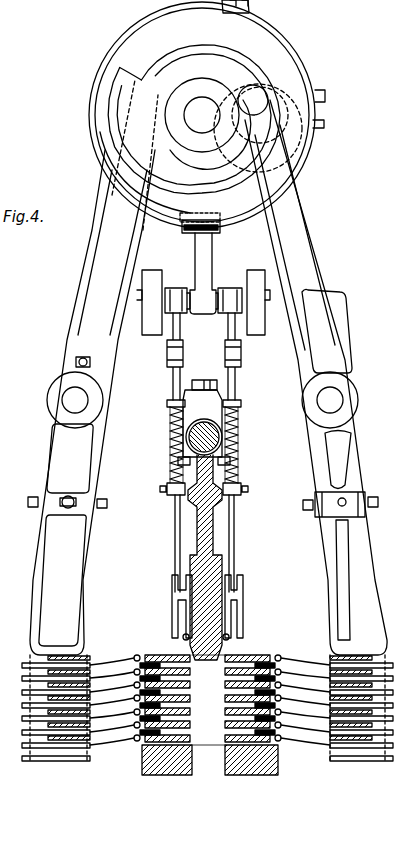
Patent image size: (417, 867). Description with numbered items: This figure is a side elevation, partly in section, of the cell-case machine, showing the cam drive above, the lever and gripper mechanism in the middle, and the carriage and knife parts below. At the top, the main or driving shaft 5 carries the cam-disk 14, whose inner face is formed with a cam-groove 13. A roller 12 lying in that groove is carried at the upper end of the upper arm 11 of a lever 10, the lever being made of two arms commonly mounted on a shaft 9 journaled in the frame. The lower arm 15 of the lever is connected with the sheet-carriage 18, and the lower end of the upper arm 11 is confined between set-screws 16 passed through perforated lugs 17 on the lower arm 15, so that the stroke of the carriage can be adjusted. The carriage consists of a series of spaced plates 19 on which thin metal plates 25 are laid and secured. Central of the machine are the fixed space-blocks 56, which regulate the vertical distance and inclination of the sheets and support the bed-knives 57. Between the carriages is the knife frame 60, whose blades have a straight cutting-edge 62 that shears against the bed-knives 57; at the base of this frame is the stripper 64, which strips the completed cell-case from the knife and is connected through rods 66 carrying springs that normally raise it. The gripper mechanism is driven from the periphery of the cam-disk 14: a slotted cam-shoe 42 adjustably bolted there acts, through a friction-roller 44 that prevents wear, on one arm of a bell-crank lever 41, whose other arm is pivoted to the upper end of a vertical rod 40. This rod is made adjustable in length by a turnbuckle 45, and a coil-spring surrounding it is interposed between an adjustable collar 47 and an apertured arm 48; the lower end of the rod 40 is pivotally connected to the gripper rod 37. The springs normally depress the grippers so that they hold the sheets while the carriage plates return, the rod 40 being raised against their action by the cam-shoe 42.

The main or driving shaft 5 is at (208, 123).
The shaft 9 is at (72, 400).
The lever 10 is at (201, 391).
The upper arm 11 is at (208, 377).
The roller 12 is at (266, 98).
The cam-groove 13 is at (194, 137).
The cam-disk 14 is at (202, 114).
The lower arm 15 is at (208, 580).
The set-screws 16 is at (205, 502).
The perforated lugs 17 is at (365, 512).
The sheet-carriage 18 is at (210, 690).
The plates 19 is at (76, 745).
The thin metal plates 25 is at (116, 748).
The rod 37 is at (208, 606).
The vertical rod 40 is at (208, 543).
The bell-crank lever 41 is at (203, 284).
The cam-shoe 42 is at (326, 98).
The friction-roller 44 is at (221, 233).
The turnbuckle 45 is at (202, 356).
The adjustable collar 47 is at (170, 496).
The apertured arm 48 is at (167, 404).
The space-blocks 56 is at (208, 727).
The bed-knives 57 is at (224, 685).
The knife frame 60 is at (215, 552).
The straight cutting-edge 62 is at (190, 645).
The stripper 64 is at (210, 714).
The rods 66 is at (180, 460).